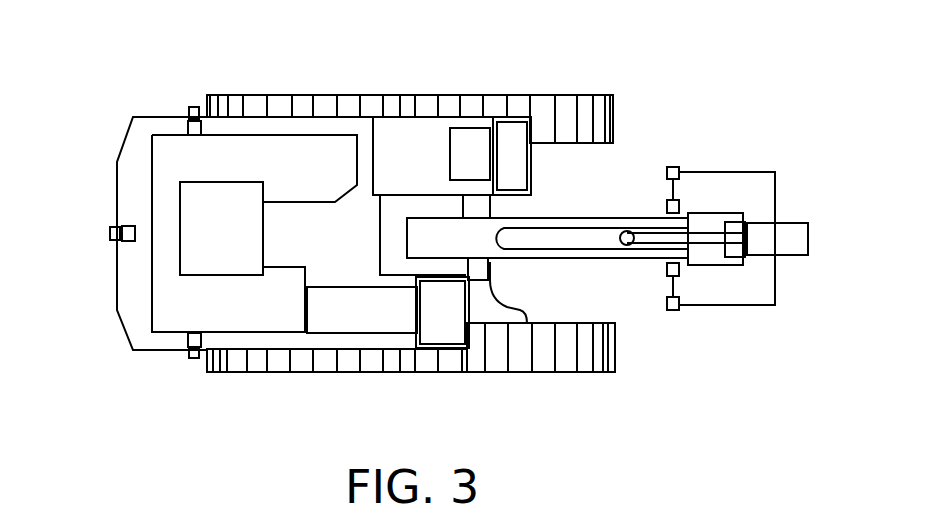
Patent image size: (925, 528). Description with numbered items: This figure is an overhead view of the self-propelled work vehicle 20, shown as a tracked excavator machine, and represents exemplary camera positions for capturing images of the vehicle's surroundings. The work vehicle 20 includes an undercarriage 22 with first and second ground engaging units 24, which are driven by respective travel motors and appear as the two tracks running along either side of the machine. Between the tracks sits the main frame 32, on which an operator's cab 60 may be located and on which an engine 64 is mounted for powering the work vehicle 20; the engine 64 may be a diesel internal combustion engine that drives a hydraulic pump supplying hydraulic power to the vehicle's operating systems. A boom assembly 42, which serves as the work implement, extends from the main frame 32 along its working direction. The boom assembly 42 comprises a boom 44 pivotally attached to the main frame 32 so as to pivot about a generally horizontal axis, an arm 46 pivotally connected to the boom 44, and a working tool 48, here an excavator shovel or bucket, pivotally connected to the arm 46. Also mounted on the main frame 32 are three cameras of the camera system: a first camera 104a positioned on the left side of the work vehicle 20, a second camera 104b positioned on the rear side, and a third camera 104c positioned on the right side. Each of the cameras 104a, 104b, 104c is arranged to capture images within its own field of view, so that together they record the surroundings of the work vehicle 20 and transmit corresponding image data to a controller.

The self-propelled work vehicle 20 is at (806, 130).
The undercarriage 22 is at (583, 96).
The ground engaging units 24 is at (570, 372).
The main frame 32 is at (130, 178).
The boom assembly 42 is at (618, 304).
The boom 44 is at (628, 218).
The arm 46 is at (808, 240).
The working tool 48 is at (710, 172).
The operator's cab 60 is at (439, 150).
The engine 64 is at (208, 242).
The first camera 104a is at (190, 104).
The second camera 104b is at (110, 232).
The third camera 104c is at (195, 357).